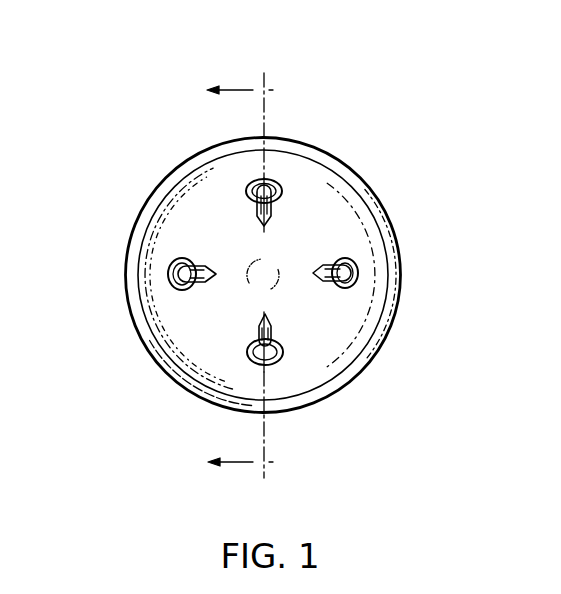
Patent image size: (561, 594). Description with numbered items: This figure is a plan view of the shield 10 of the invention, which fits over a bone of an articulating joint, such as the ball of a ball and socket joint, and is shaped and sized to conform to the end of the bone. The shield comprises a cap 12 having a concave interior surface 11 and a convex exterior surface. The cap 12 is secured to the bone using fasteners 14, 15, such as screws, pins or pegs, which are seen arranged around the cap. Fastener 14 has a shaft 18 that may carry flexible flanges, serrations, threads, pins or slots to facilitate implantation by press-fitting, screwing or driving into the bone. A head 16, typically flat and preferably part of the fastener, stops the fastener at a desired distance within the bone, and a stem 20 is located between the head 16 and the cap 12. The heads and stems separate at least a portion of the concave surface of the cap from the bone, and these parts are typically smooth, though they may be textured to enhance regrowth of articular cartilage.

The shield 10 is at (86, 199).
The concave interior surface 11 is at (323, 210).
The cap 12 is at (202, 208).
The fastener 14 is at (320, 287).
The fastener 15 is at (258, 332).
The head 16 is at (247, 356).
The shaft 18 is at (342, 248).
The stem 20 is at (360, 266).